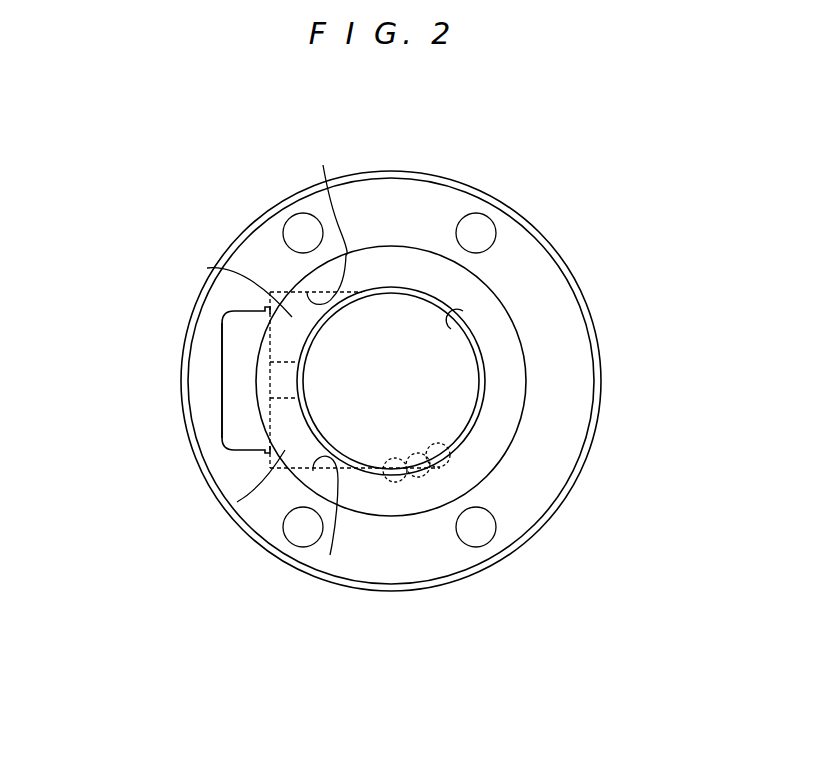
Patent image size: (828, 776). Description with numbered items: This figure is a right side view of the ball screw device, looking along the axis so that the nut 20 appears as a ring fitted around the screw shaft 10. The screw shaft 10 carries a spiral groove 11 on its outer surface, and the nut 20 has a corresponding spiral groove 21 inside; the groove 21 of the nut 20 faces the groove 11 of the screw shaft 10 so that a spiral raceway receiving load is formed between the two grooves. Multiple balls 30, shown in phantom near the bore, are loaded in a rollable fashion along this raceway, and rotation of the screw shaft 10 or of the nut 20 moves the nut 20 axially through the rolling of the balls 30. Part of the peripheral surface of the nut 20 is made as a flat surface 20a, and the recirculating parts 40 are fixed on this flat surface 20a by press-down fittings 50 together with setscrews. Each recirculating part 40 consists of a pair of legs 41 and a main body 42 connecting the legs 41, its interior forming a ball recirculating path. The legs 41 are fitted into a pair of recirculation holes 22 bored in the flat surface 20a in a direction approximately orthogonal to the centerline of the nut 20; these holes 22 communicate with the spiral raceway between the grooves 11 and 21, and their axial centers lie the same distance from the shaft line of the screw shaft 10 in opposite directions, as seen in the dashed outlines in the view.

The screw shaft 10 is at (397, 340).
The spiral groove 11 is at (487, 353).
The nut 20 is at (222, 297).
The flat surface 20a is at (263, 345).
The spiral groove 21 is at (467, 327).
The recirculation holes 22 is at (323, 165).
The balls 30 is at (447, 462).
The recirculating parts 40 is at (164, 380).
The main body 42 is at (240, 382).
The legs 41 is at (207, 268).
The press-down fittings 50 is at (222, 408).